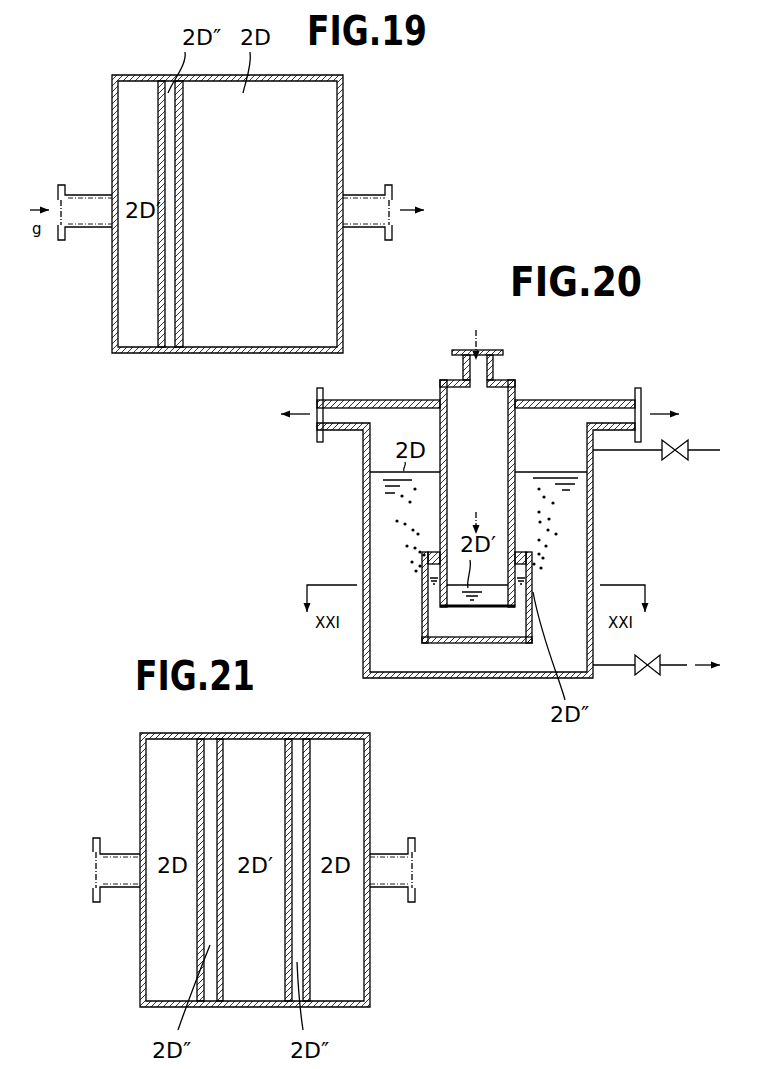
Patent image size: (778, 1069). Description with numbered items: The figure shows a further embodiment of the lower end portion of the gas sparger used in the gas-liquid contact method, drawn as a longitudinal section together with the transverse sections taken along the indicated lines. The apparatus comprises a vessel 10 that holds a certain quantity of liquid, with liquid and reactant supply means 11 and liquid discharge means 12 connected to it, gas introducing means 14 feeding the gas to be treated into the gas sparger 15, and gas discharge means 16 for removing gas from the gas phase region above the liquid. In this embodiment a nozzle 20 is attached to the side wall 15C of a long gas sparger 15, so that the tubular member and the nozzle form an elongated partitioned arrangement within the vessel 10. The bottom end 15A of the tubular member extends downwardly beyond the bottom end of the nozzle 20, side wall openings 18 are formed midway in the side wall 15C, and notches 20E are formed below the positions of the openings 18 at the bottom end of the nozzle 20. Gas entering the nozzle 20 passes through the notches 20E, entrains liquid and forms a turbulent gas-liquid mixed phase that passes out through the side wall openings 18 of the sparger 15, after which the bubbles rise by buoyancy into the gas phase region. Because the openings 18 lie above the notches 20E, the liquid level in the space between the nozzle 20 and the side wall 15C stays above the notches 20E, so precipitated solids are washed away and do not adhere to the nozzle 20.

In FIG. 19, the vessel 10 is at (346, 110).
In FIG. 20, the vessel 10 is at (362, 480).
In FIG. 21, the vessel 10 is at (373, 805).
In FIG. 20, the liquid and reactant supply means 11 is at (650, 451).
In FIG. 20, the liquid discharge means 12 is at (612, 668).
In FIG. 19, the gas introducing means 14 is at (77, 193).
In FIG. 20, the gas introducing means 14 is at (495, 366).
In FIG. 19, the gas sparger 15 is at (184, 292).
In FIG. 20, the gas sparger 15 is at (439, 519).
In FIG. 21, the gas sparger 15 is at (196, 778).
In FIG. 20, the bottom end of tubular member 15A is at (530, 606).
In FIG. 20, the side wall of sparger 15C is at (440, 532).
In FIG. 19, the gas discharge means 16 is at (376, 193).
In FIG. 20, the gas discharge means 16 is at (368, 398).
In FIG. 21, the gas discharge means 16 is at (118, 890).
In FIG. 20, the side wall openings 18 is at (534, 571).
In FIG. 19, the nozzle 20 is at (163, 308).
In FIG. 20, the nozzle 20 is at (421, 630).
In FIG. 21, the nozzle 20 is at (219, 969).
In FIG. 20, the notches 20E is at (449, 607).